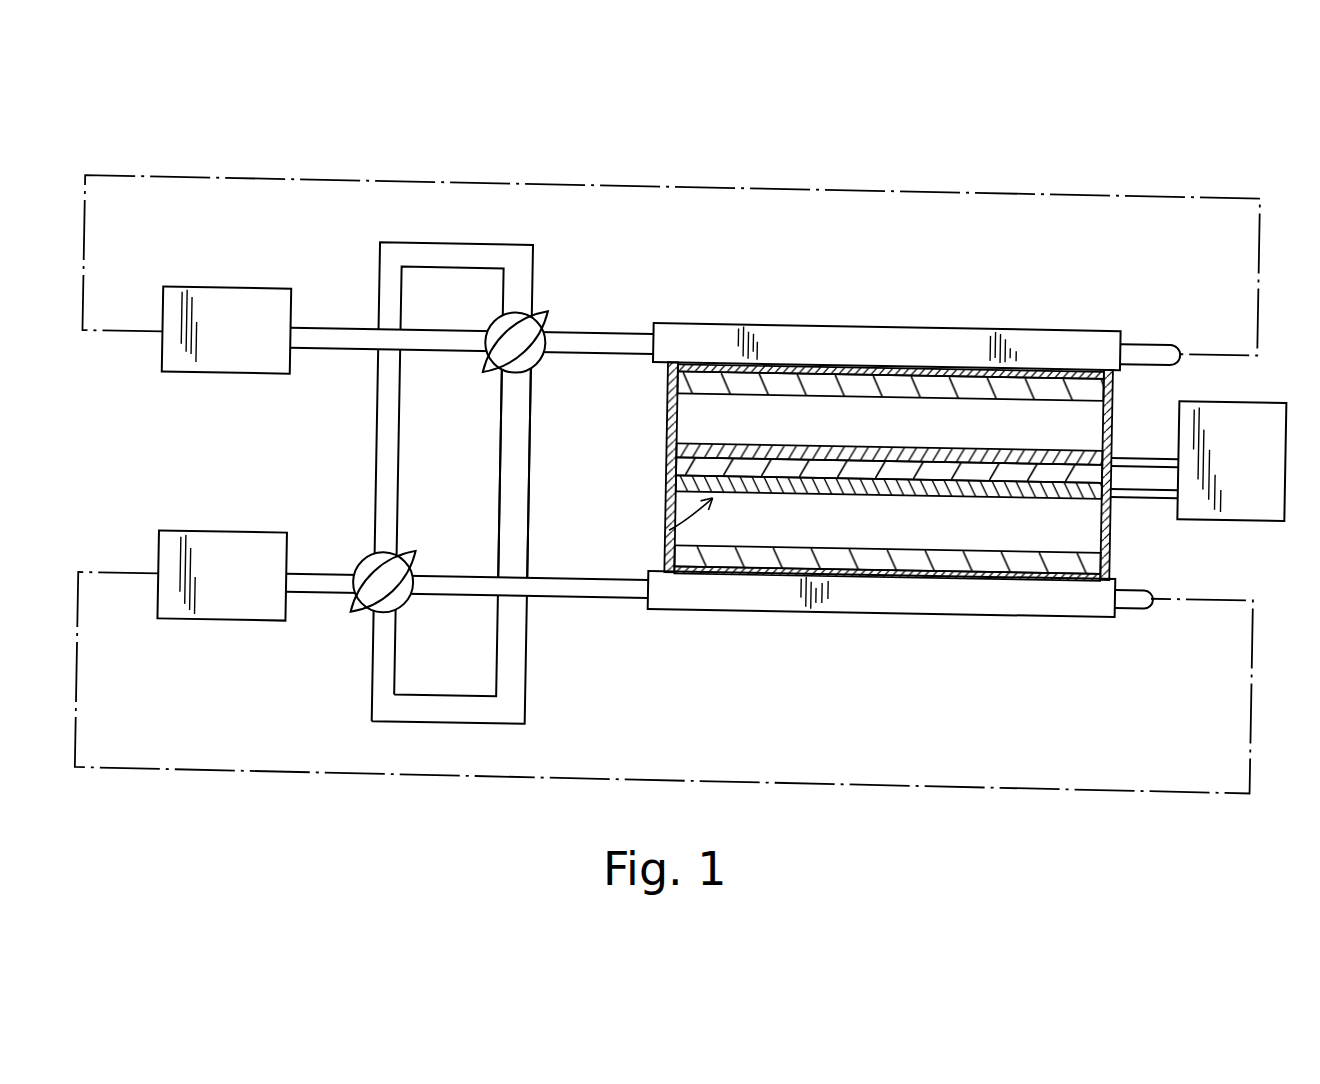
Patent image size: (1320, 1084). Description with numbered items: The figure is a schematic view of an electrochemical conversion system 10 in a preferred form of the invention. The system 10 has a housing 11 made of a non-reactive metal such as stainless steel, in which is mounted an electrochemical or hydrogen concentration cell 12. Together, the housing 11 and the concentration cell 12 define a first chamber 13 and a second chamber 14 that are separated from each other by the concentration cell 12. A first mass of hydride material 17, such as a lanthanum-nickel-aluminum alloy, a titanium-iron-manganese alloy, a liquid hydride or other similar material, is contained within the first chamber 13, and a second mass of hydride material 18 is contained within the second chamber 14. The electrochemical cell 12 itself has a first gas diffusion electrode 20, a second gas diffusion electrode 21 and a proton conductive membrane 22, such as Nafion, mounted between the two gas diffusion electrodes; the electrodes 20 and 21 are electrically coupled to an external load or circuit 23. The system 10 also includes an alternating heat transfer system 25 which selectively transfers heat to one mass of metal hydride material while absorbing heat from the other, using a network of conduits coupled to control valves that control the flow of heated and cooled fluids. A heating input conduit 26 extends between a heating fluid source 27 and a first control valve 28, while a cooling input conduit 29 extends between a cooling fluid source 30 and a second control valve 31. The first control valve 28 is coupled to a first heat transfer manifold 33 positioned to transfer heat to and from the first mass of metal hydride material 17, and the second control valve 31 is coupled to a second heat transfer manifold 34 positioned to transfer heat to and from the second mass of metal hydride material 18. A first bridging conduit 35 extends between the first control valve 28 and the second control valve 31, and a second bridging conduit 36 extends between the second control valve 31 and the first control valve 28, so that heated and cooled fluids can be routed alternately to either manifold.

The electrochemical conversion system 10 is at (268, 121).
The housing 11 is at (880, 471).
The electrochemical or hydrogen concentration cell 12 is at (668, 527).
The first chamber 13 is at (920, 434).
The second chamber 14 is at (922, 532).
The first mass of hydride material 17 is at (1080, 392).
The second mass of hydride material 18 is at (1086, 543).
The first gas diffusion electrode 20 is at (672, 432).
The second gas diffusion electrode 21 is at (857, 460).
The proton conductive membrane 22 is at (806, 465).
The external load or circuit 23 is at (1268, 512).
The alternating heat transfer system 25 is at (134, 427).
The heating input conduit 26 is at (330, 358).
The heating fluid source 27 is at (243, 305).
The first control valve 28 is at (548, 314).
The cooling input conduit 29 is at (321, 581).
The cooling fluid source 30 is at (242, 629).
The second control valve 31 is at (414, 600).
The first heat transfer manifold 33 is at (825, 322).
The second heat transfer manifold 34 is at (845, 609).
The first bridging conduit 35 is at (528, 447).
The second bridging conduit 36 is at (474, 248).